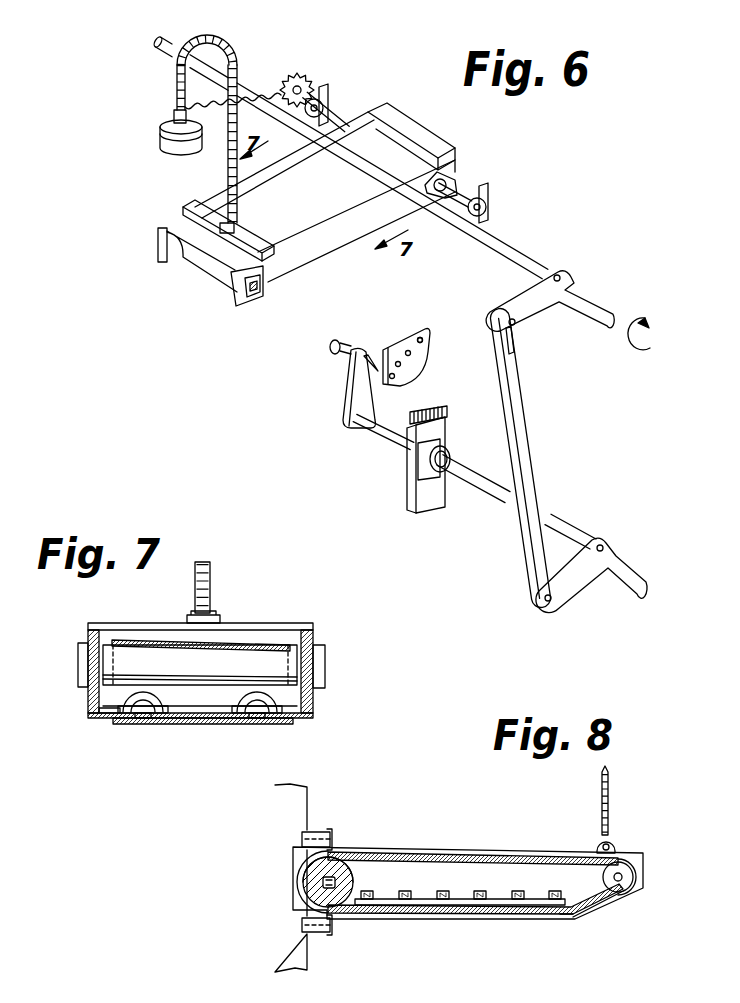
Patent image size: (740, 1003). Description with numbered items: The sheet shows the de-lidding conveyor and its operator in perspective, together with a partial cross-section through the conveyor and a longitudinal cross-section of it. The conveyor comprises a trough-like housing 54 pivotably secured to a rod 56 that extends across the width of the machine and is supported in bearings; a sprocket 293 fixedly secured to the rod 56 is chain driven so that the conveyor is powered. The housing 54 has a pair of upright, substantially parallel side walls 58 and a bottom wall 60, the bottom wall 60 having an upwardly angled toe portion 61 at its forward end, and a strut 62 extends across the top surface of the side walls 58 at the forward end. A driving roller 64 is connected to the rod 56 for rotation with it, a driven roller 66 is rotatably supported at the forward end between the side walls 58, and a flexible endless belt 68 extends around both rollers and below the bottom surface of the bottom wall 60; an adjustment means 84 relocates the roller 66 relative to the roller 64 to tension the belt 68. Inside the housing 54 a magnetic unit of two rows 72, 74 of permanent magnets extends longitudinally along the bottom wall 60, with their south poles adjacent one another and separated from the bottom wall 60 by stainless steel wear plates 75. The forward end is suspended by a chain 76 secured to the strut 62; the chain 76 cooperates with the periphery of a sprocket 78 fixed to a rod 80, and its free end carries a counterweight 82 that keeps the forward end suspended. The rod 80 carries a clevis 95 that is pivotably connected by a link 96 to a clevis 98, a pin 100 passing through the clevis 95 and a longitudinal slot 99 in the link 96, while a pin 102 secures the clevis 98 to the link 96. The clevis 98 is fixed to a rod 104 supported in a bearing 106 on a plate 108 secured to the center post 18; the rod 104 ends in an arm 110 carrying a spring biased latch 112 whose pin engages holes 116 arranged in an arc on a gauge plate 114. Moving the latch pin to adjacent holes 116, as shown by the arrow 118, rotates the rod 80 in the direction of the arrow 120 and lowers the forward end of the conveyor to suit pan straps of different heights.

In FIG. 8, the center post 18 is at (288, 805).
In FIG. 6, the trough-like housing 54 is at (283, 268).
In FIG. 6, the rod 56 is at (337, 118).
In FIG. 8, the rod 56 is at (307, 883).
In FIG. 7, the side walls 58 is at (88, 697).
In FIG. 7, the bottom wall 60 is at (292, 722).
In FIG. 8, the bottom wall 60 is at (452, 914).
In FIG. 7, the toe portion 61 is at (203, 708).
In FIG. 8, the toe portion 61 is at (587, 913).
In FIG. 6, the strut 62 is at (253, 245).
In FIG. 7, the strut 62 is at (270, 623).
In FIG. 8, the strut 62 is at (615, 848).
In FIG. 8, the driving roller 64 is at (338, 862).
In FIG. 7, the driven roller 66 is at (168, 670).
In FIG. 8, the driven roller 66 is at (627, 876).
In FIG. 7, the flexible endless belt 68 is at (122, 724).
In FIG. 8, the flexible endless belt 68 is at (530, 918).
In FIG. 7, the row of permanent magnets 72 is at (257, 695).
In FIG. 8, the row of permanent magnets 72 is at (408, 892).
In FIG. 7, the row of permanent magnets 74 is at (143, 720).
In FIG. 7, the stainless steel wear plates 75 is at (140, 722).
In FIG. 8, the stainless steel wear plates 75 is at (505, 899).
In FIG. 6, the chain 76 is at (176, 100).
In FIG. 8, the chain 76 is at (608, 785).
In FIG. 6, the sprocket 78 is at (223, 50).
In FIG. 6, the rod 80 is at (254, 94).
In FIG. 6, the counterweight 82 is at (160, 138).
In FIG. 6, the adjustment means 84 is at (245, 300).
In FIG. 7, the adjustment means 84 is at (78, 648).
In FIG. 6, the clevis 95 is at (548, 300).
In FIG. 6, the link 96 is at (525, 447).
In FIG. 6, the clevis 98 is at (617, 555).
In FIG. 6, the longitudinal slot 99 is at (515, 353).
In FIG. 6, the pin 100 is at (515, 323).
In FIG. 6, the pin 102 is at (548, 602).
In FIG. 6, the rod 104 is at (558, 530).
In FIG. 6, the bearing 106 is at (422, 463).
In FIG. 6, the plate 108 is at (428, 503).
In FIG. 6, the arm 110 is at (358, 397).
In FIG. 6, the spring biased latch 112 is at (330, 350).
In FIG. 6, the gauge plate 114 is at (418, 362).
In FIG. 6, the holes 116 is at (420, 343).
In FIG. 6, the arrow 118 is at (376, 329).
In FIG. 6, the arrow 120 is at (648, 345).
In FIG. 6, the sprocket 293 is at (307, 80).